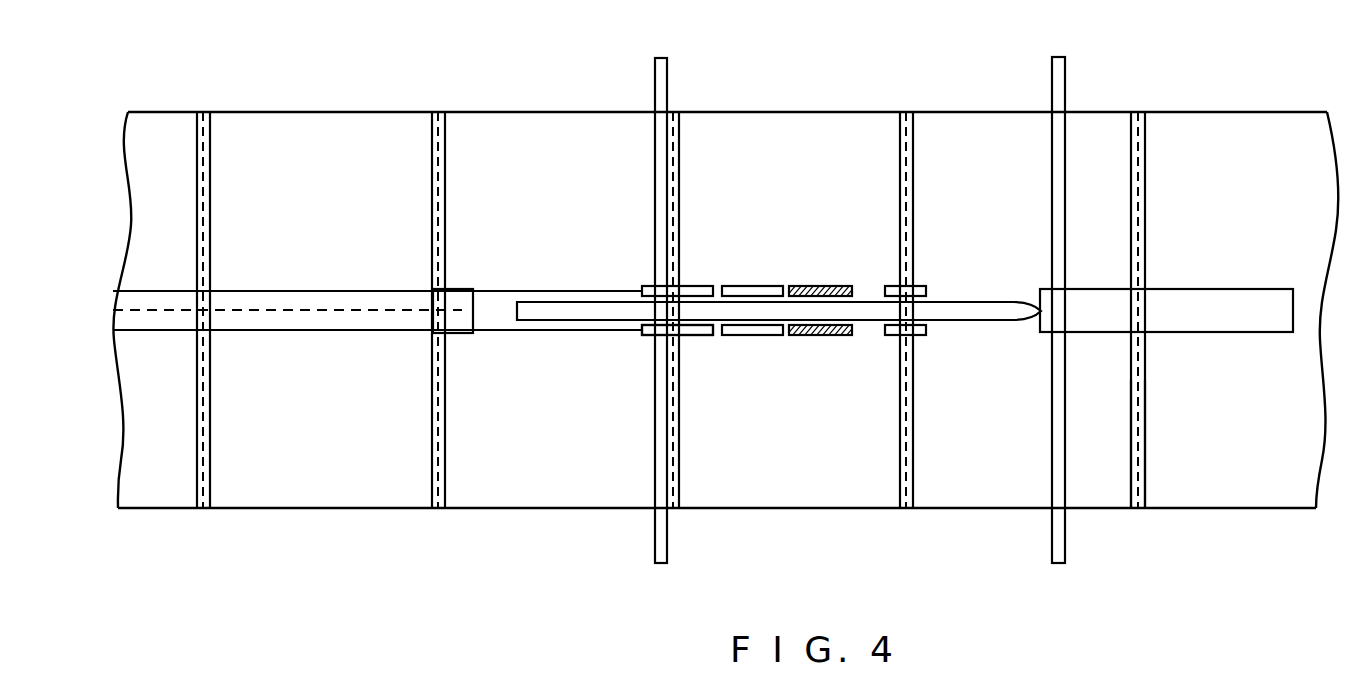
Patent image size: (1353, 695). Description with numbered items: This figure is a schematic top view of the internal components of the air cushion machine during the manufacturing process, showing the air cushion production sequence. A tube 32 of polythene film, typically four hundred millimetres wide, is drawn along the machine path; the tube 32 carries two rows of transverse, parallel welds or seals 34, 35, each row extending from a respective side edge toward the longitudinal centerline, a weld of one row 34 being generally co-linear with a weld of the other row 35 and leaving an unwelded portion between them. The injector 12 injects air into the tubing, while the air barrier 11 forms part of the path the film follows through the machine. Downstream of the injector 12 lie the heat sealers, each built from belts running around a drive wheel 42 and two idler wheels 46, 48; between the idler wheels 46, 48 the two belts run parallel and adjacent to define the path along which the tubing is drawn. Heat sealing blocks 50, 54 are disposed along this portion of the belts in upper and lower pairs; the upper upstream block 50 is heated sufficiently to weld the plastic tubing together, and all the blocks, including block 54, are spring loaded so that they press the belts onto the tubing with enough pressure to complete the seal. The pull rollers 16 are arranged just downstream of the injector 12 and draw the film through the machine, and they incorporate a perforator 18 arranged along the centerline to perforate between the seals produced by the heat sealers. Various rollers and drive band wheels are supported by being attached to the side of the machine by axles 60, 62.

The air barrier 11 is at (1073, 333).
The injector 12 is at (953, 321).
The pull rollers 16 is at (455, 295).
The perforator 18 is at (461, 328).
The tube 32 is at (1210, 145).
The transverse seal 34 is at (1142, 112).
The transverse seal 35 is at (1139, 508).
The drive wheel 42 is at (648, 337).
The idler wheel 46 is at (916, 284).
The idler wheel 48 is at (695, 337).
The heat sealing block 50 is at (808, 284).
The heat sealing block 54 is at (742, 284).
The axle 60 is at (655, 72).
The axle 62 is at (1052, 80).